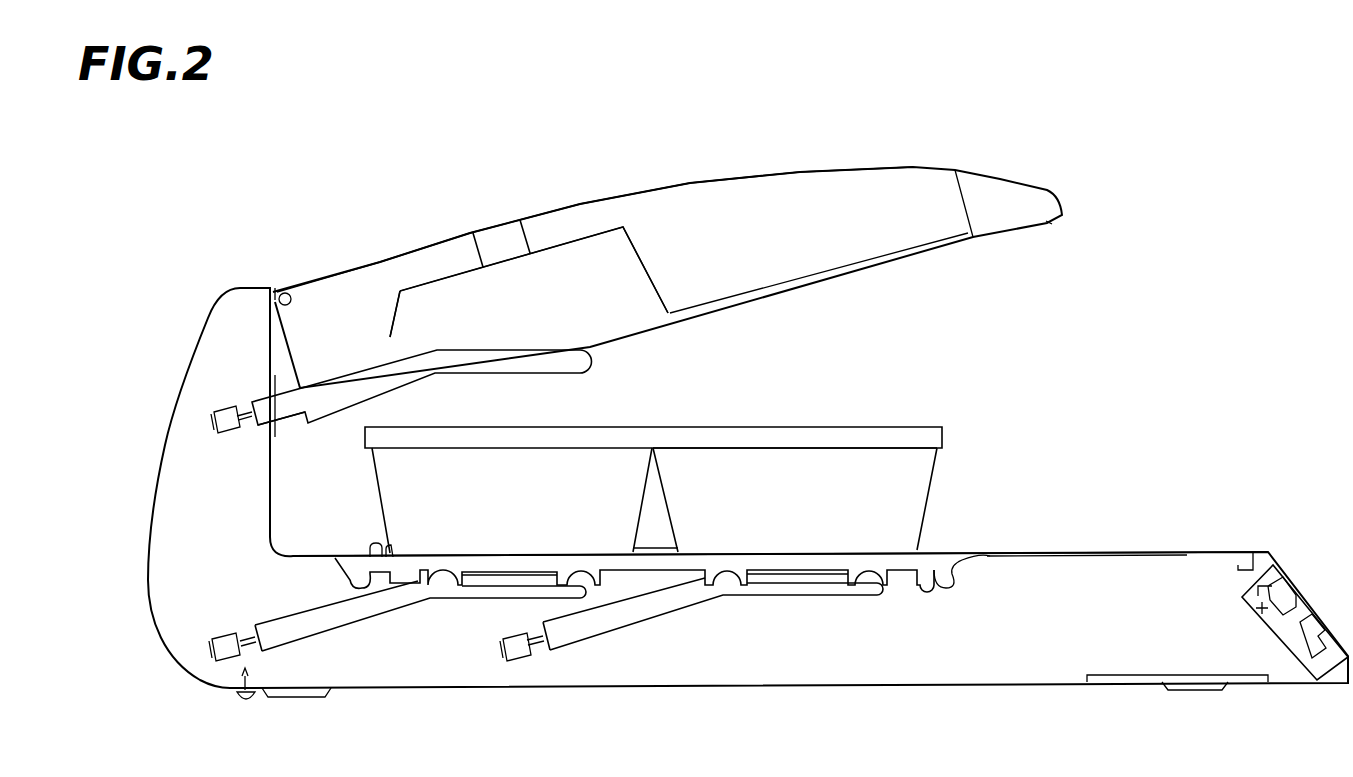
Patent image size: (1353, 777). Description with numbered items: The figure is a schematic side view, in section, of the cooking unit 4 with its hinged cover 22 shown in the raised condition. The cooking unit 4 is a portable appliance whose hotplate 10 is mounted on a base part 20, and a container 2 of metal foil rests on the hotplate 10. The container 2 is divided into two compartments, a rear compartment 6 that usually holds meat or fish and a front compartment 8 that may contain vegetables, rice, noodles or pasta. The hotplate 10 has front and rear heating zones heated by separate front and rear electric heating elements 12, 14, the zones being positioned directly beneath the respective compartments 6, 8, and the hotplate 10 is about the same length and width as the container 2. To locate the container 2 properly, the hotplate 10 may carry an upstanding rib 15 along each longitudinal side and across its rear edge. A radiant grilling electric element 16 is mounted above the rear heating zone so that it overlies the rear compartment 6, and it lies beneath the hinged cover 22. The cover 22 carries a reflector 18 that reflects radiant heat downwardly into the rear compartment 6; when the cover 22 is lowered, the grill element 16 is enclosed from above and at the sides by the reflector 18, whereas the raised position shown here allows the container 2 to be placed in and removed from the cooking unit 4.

The container 2 is at (805, 365).
The cooking unit 4 is at (388, 168).
The rear compartment 6 is at (505, 512).
The front compartment 8 is at (802, 512).
The hotplate 10 is at (878, 563).
The front electric heating element 12 is at (815, 597).
The rear electric heating element 14 is at (493, 598).
The upstanding rib 15 is at (377, 547).
The radiant grilling electric element 16 is at (523, 345).
The reflector 18 is at (568, 245).
The base part 20 is at (1097, 552).
The hinged cover 22 is at (665, 188).